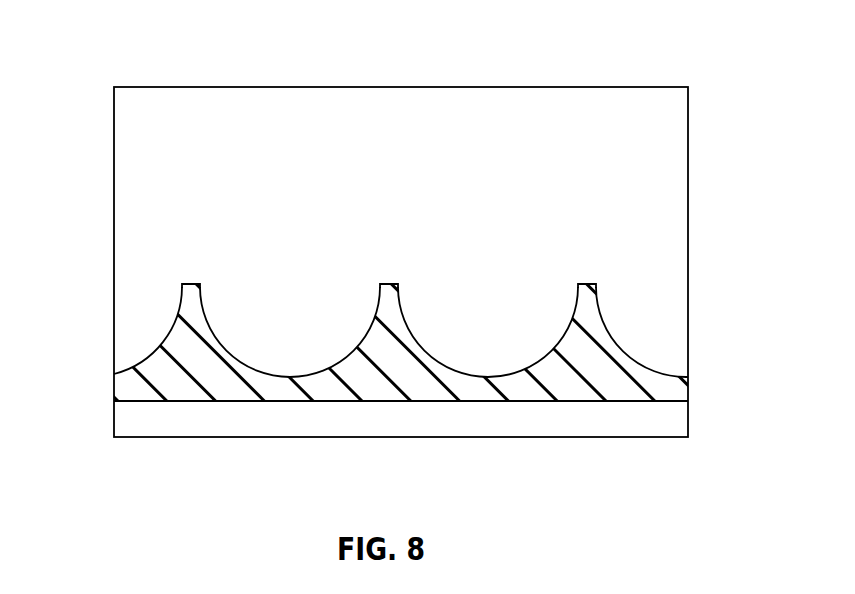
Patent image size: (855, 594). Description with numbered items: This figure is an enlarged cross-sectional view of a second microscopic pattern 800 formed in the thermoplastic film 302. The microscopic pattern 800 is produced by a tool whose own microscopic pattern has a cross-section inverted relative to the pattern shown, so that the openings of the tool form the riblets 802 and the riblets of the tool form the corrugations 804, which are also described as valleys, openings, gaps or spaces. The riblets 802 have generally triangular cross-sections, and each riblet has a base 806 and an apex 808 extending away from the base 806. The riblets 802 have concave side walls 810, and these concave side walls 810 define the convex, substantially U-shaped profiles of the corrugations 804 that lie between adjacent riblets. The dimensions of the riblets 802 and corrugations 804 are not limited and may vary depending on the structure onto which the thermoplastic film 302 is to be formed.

The microscopic pattern 800 is at (648, 242).
The thermoplastic film 302 is at (192, 390).
The base 806 is at (588, 347).
The corrugations 804 is at (503, 295).
The riblets 802 is at (690, 373).
The concave side walls 810 is at (167, 331).
The apex 808 is at (586, 283).